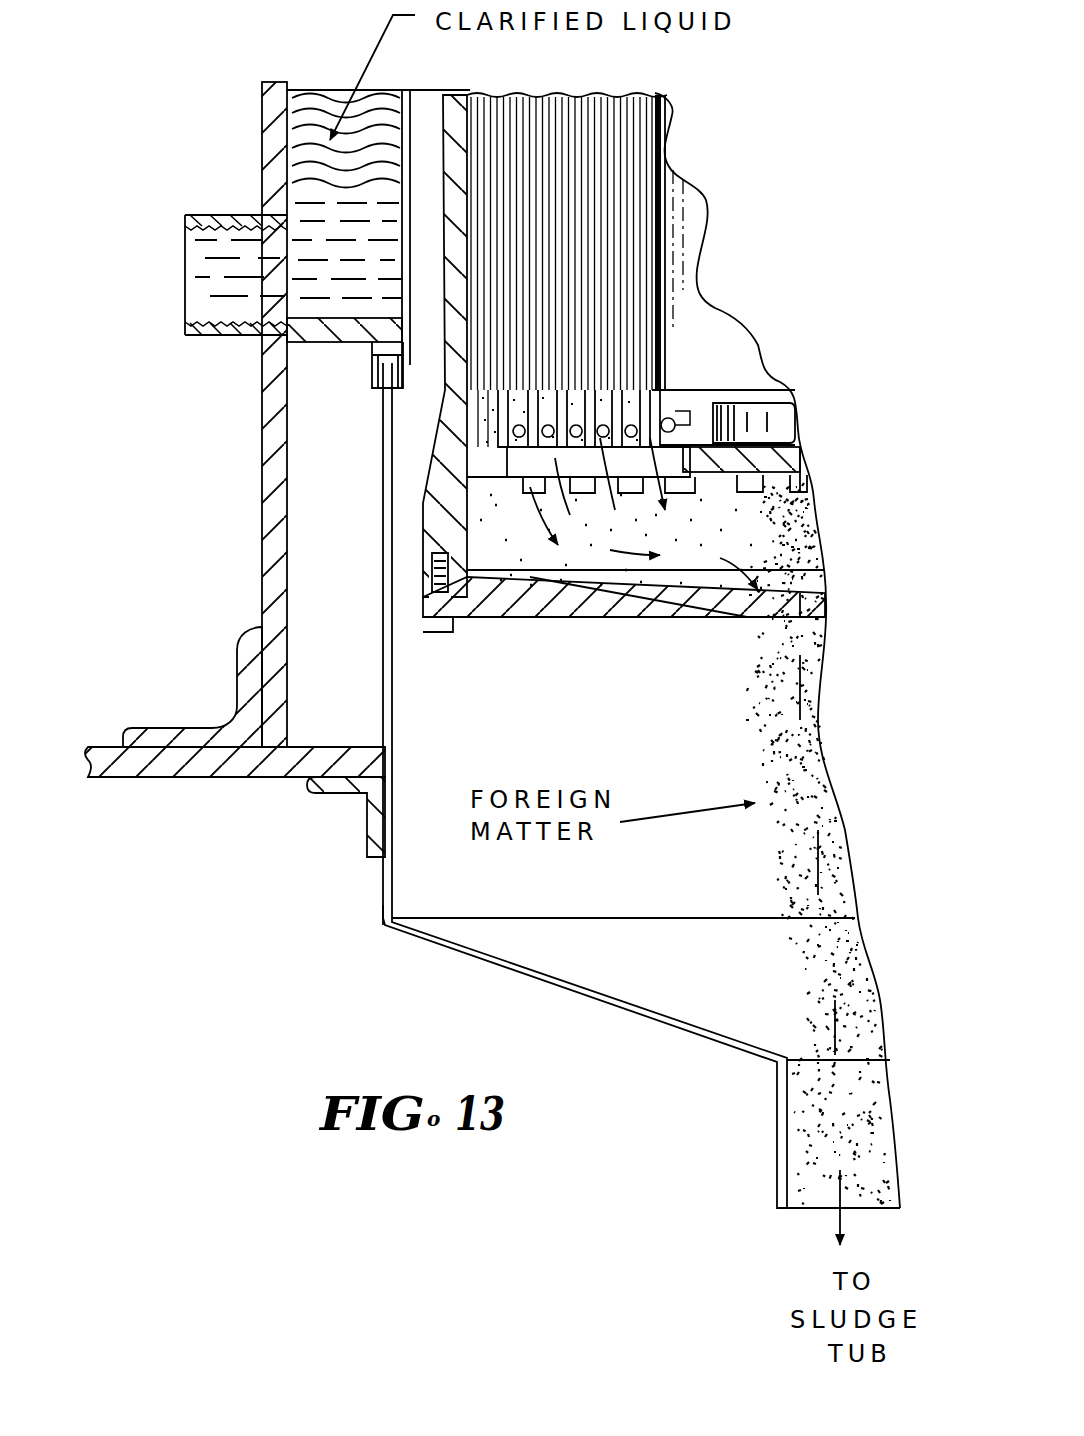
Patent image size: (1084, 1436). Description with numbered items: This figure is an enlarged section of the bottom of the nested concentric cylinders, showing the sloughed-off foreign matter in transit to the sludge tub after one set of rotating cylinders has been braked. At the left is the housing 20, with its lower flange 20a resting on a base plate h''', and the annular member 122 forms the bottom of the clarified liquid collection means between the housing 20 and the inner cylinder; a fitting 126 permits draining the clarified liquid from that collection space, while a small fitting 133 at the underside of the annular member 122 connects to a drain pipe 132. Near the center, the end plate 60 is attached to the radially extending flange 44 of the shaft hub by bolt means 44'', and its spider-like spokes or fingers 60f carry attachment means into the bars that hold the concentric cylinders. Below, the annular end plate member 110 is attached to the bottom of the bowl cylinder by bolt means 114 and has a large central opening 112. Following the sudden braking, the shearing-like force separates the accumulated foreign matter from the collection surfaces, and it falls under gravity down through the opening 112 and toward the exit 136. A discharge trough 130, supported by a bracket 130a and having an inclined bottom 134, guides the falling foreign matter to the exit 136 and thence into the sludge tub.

The housing 20 is at (262, 522).
The wall flange 20a is at (193, 728).
The base plate h''' is at (235, 795).
The fitting 126 is at (205, 213).
The annular member 122 is at (330, 330).
The drain fitting 133 is at (372, 375).
The end plate 60 is at (713, 477).
The spokes or fingers 60f is at (637, 514).
The flange 44 is at (723, 394).
The bolt means 44'' is at (781, 489).
The annular end plate member 110 is at (535, 618).
The central opening 112 is at (745, 620).
The bolt means 114 is at (455, 625).
The drain pipe 132 is at (383, 700).
The support bracket 130a is at (370, 825).
The sludge discharge trough 130 is at (348, 942).
The inclined trough bottom 134 is at (600, 990).
The exit 136 is at (777, 1138).